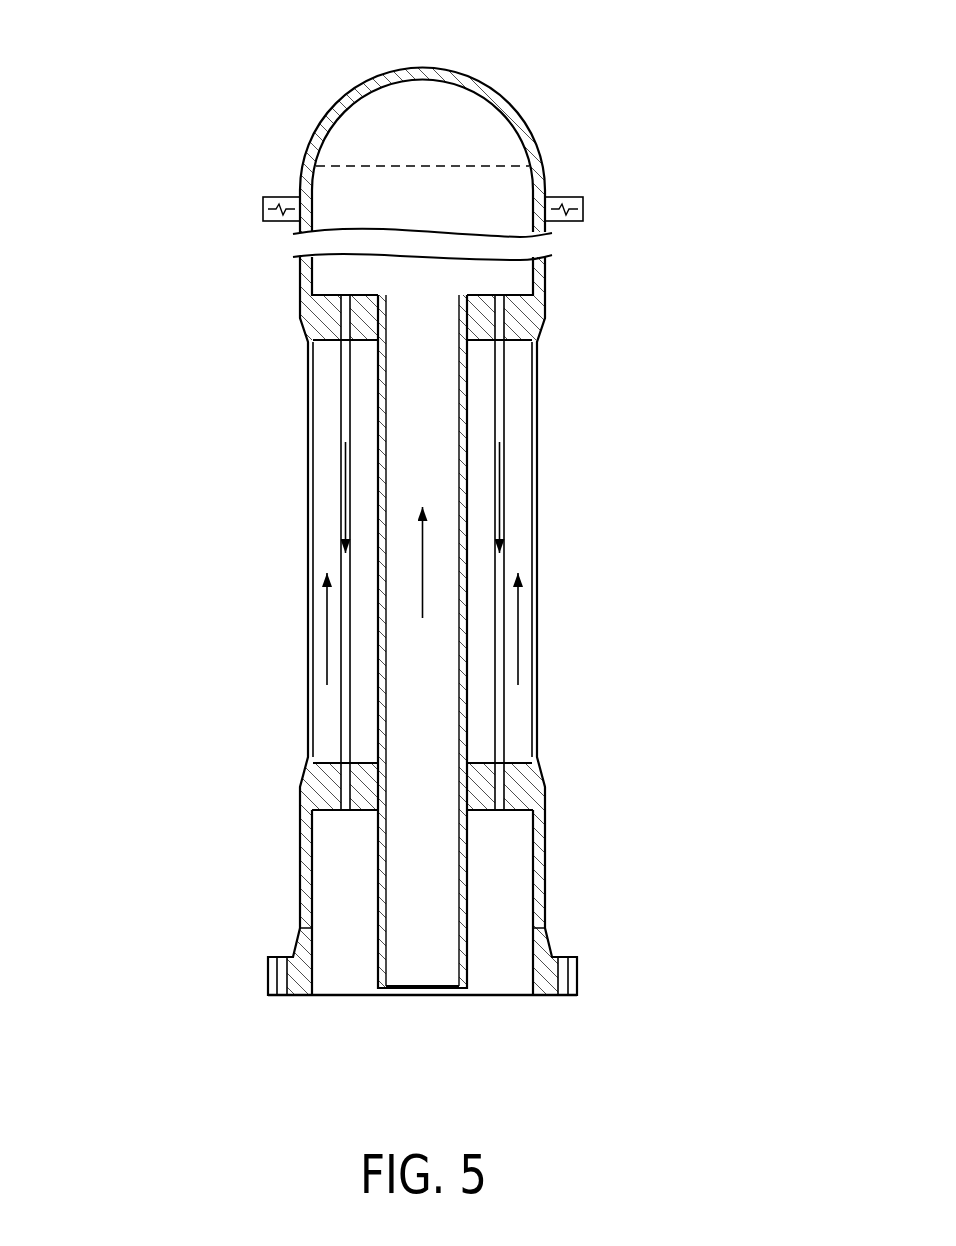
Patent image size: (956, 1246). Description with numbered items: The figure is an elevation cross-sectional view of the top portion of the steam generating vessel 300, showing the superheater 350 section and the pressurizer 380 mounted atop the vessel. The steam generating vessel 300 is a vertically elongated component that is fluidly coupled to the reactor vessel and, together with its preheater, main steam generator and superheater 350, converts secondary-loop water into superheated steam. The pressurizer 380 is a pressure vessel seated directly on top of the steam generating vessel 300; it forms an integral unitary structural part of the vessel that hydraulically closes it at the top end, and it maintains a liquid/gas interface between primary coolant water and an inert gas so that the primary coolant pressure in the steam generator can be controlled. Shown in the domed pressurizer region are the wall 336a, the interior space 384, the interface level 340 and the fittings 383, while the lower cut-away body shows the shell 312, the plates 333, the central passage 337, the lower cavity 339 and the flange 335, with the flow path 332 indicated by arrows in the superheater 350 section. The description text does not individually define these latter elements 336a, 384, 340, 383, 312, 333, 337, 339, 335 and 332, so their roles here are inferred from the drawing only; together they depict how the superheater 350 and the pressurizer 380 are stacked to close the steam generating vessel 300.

The steam generating vessel 300 is at (425, 552).
The pressurizer 380 is at (558, 145).
The head wall 336a is at (315, 133).
The head cavity 384 is at (440, 105).
The fluid level 340 is at (480, 163).
The sensor 383 is at (584, 206).
The outer shell 312 is at (538, 590).
The support block 333 is at (523, 317).
The central tube 337 is at (378, 688).
The base cavity 339 is at (503, 922).
The flange 335 is at (578, 995).
The superheater 350 is at (293, 584).
The return tube flow 332 is at (507, 712).